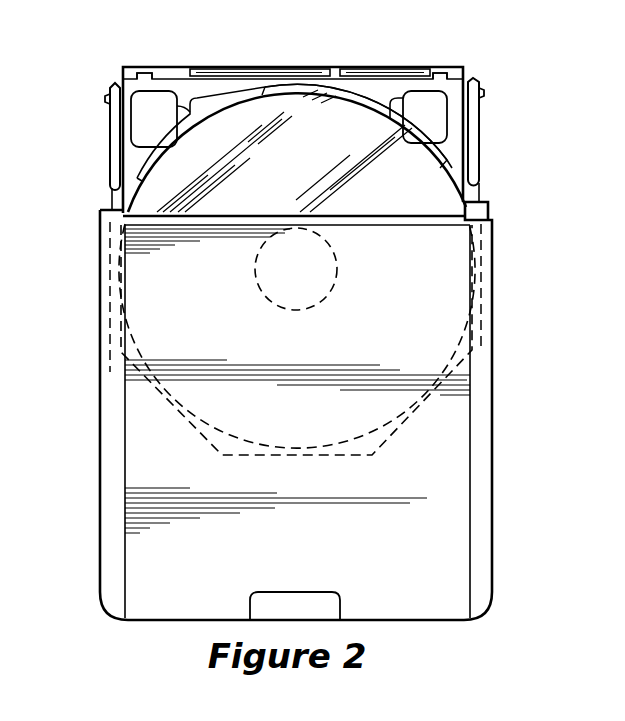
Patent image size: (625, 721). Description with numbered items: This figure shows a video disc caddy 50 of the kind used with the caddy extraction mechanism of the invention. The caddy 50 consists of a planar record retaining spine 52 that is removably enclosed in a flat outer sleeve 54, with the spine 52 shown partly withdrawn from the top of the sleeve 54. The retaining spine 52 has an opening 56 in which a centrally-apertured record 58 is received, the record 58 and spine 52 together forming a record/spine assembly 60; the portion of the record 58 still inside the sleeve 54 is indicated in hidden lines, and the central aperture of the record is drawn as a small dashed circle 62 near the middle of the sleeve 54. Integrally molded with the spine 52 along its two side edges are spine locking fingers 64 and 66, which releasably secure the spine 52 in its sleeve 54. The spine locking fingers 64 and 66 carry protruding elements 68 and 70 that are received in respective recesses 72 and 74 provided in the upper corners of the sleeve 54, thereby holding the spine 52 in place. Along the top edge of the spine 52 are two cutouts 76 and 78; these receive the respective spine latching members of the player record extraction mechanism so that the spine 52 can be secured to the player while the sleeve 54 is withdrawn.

The caddy 50 is at (499, 192).
The record retaining spine 52 is at (210, 80).
The outer sleeve 54 is at (455, 452).
The opening 56 is at (438, 157).
The record 58 is at (145, 195).
The record/spine assembly 60 is at (482, 68).
The aperture 62 is at (320, 292).
The spine locking finger 64 is at (108, 137).
The spine locking finger 66 is at (480, 141).
The protruding element 68 is at (107, 98).
The protruding element 70 is at (482, 93).
The recess 72 is at (108, 228).
The recess 74 is at (480, 224).
The cutout 76 is at (147, 70).
The cutout 78 is at (443, 71).